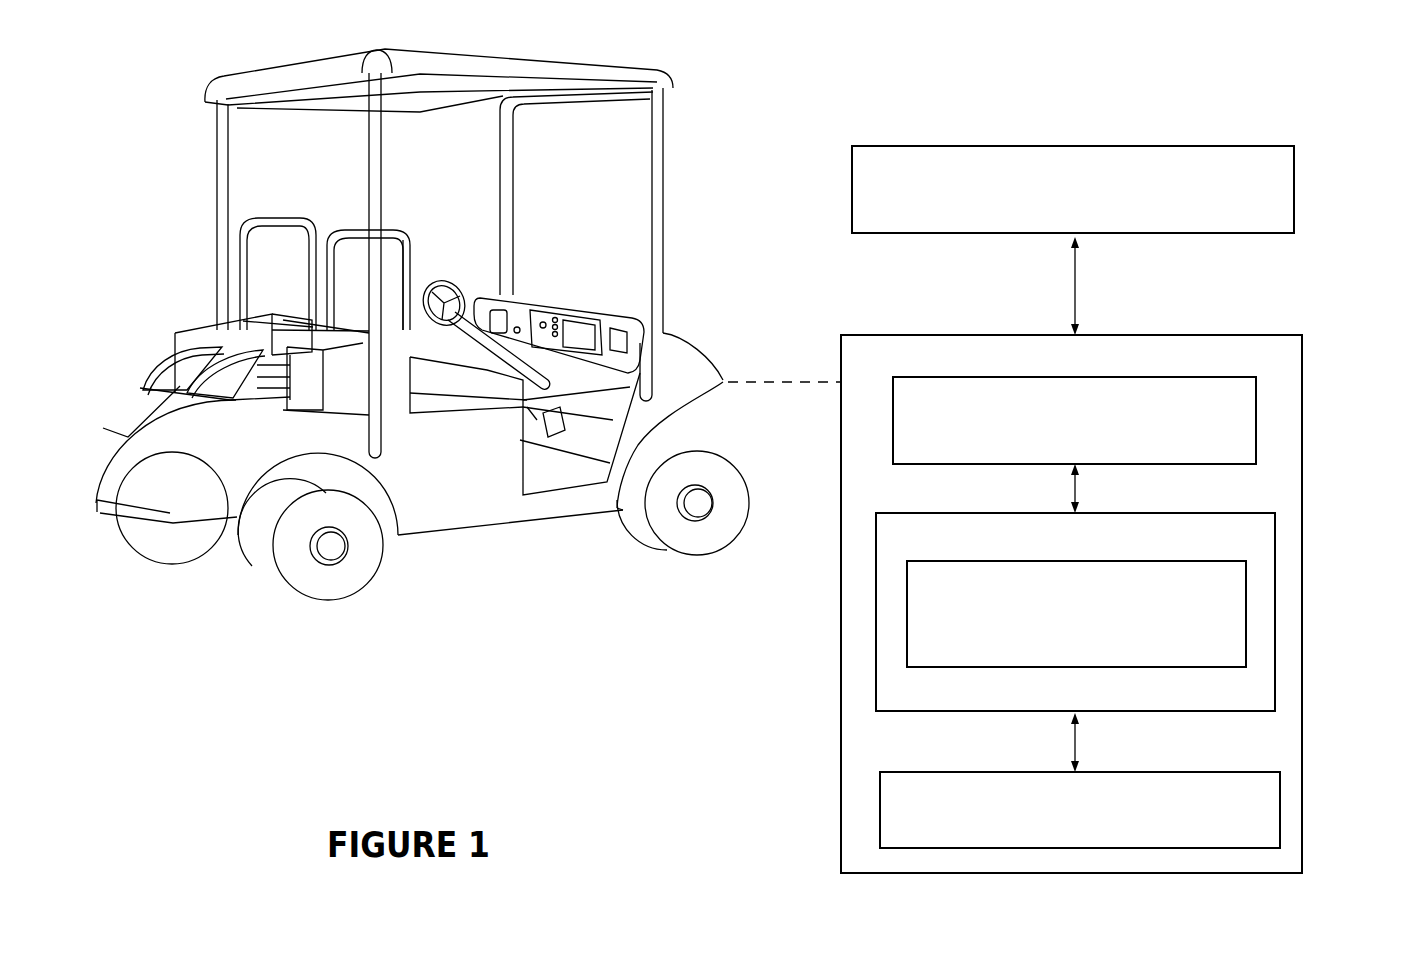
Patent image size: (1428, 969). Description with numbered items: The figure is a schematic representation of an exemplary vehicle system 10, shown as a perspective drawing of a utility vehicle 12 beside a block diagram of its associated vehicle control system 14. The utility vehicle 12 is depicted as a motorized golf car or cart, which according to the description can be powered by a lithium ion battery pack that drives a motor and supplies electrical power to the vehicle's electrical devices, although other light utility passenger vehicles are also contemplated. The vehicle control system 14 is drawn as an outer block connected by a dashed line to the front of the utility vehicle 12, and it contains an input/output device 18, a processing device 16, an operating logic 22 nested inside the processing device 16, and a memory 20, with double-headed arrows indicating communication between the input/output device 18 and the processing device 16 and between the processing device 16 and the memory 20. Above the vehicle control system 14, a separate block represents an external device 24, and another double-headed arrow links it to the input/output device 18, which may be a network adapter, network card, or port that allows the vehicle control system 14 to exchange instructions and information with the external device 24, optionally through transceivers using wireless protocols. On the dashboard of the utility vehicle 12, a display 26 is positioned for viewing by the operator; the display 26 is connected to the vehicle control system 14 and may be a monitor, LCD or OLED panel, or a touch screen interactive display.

The vehicle system 10 is at (333, 710).
The utility vehicle 12 is at (718, 139).
The vehicle control system 14 is at (1302, 368).
The processing device 16 is at (876, 602).
The input/output device 18 is at (1257, 425).
The memory 20 is at (1280, 812).
The operating logic 22 is at (1224, 635).
The external device 24 is at (1296, 197).
The display 26 is at (577, 330).